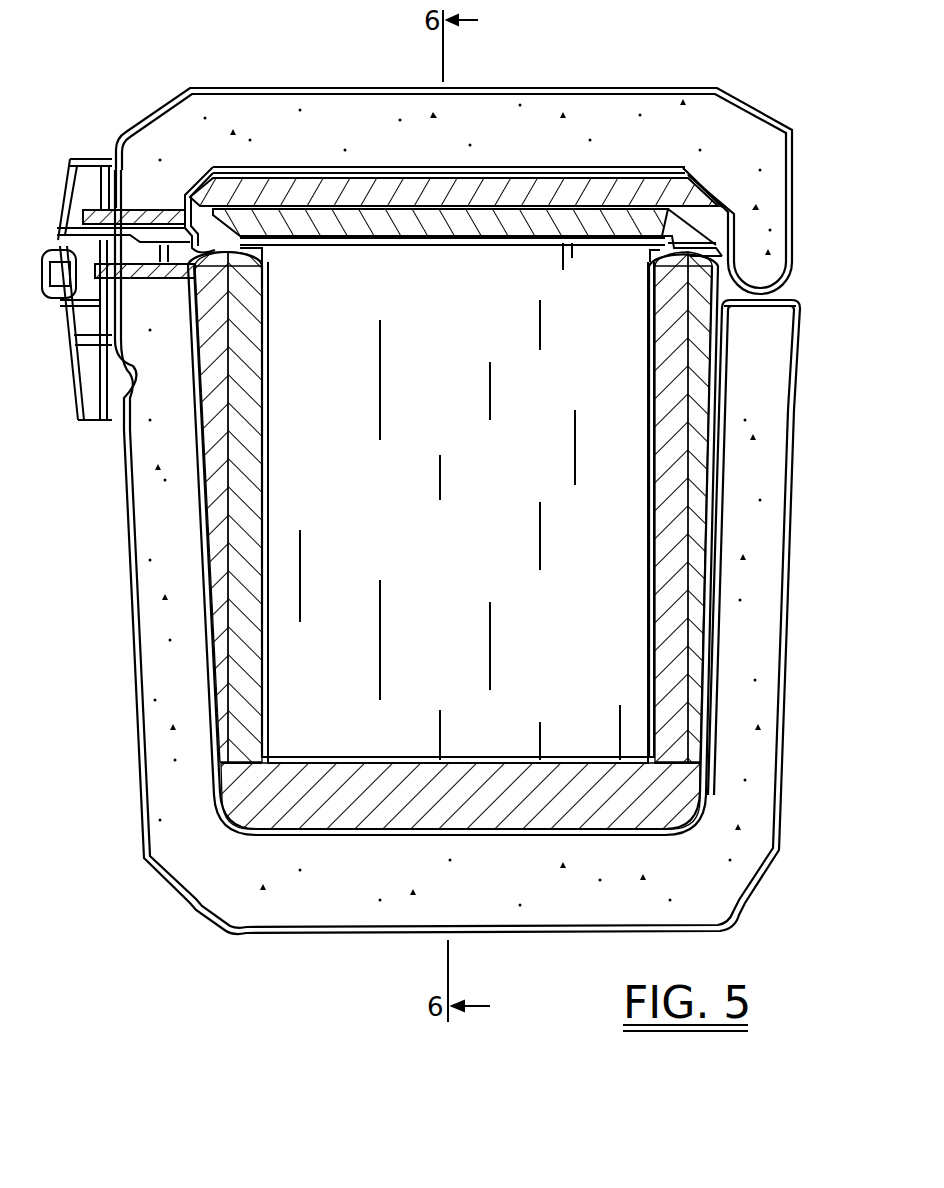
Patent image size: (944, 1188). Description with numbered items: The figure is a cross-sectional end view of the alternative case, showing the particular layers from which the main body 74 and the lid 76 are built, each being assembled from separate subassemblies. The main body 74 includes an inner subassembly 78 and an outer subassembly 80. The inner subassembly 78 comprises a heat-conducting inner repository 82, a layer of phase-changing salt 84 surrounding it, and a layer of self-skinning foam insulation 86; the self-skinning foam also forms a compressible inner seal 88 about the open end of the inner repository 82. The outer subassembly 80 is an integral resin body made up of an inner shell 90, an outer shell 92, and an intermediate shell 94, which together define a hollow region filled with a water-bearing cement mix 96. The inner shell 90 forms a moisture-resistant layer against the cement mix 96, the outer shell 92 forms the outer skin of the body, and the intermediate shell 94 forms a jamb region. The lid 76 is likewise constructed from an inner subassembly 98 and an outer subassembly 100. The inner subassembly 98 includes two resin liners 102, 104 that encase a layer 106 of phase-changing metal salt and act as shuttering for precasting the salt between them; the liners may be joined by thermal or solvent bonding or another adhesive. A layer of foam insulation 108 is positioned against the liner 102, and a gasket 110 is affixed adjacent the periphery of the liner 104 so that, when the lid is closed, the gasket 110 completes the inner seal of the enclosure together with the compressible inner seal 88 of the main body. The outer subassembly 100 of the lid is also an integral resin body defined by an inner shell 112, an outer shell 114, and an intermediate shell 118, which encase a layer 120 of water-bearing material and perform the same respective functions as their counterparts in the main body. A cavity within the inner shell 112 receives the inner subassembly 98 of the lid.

The main body 74 is at (799, 690).
The lid 76 is at (712, 74).
The inner subassembly 78 is at (680, 657).
The outer subassembly 80 is at (768, 740).
The heat-conducting inner repository 82 is at (268, 480).
The layer of phase-changing salt 84 is at (250, 362).
The layer of self-skinning foam insulation 86 is at (218, 396).
The compressible inner seal 88 is at (262, 258).
The inner shell 90 is at (205, 498).
The outer shell 92 is at (125, 600).
The intermediate shell 94 is at (150, 270).
The water-bearing cement mix 96 is at (766, 372).
The inner subassembly 98 is at (396, 226).
The outer subassembly 100 is at (462, 104).
The liner 102 is at (290, 195).
The liner 104 is at (532, 243).
The layer of phase-changing metal salt 106 is at (457, 227).
The layer of foam insulation 108 is at (650, 190).
The gasket 110 is at (185, 200).
The inner shell 112 is at (366, 175).
The outer shell 114 is at (160, 104).
The intermediate shell 118 is at (78, 232).
The layer of water-bearing material 120 is at (530, 112).